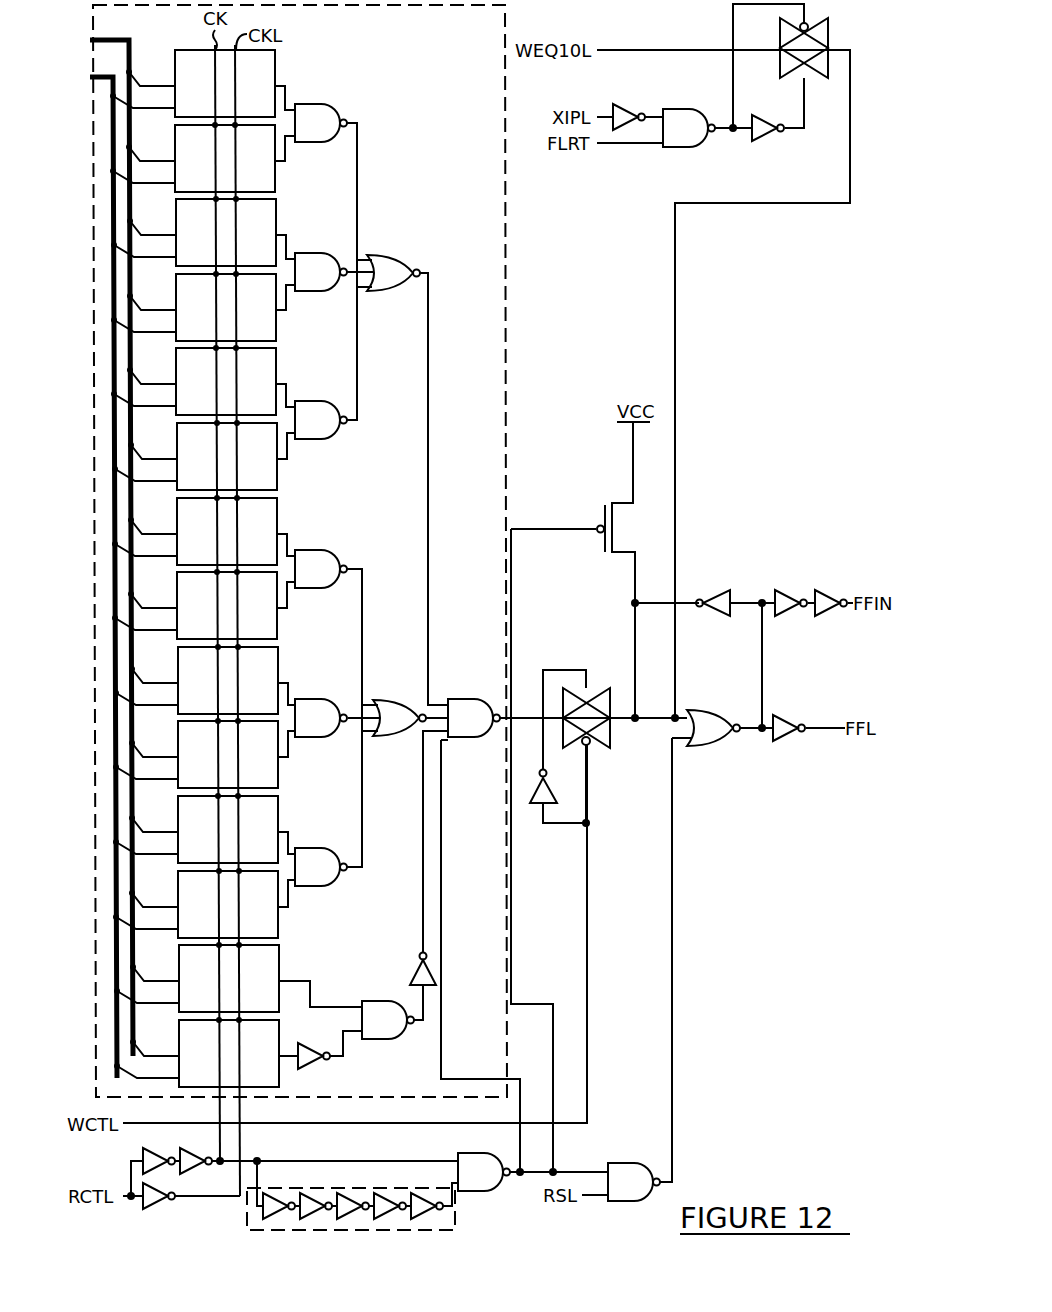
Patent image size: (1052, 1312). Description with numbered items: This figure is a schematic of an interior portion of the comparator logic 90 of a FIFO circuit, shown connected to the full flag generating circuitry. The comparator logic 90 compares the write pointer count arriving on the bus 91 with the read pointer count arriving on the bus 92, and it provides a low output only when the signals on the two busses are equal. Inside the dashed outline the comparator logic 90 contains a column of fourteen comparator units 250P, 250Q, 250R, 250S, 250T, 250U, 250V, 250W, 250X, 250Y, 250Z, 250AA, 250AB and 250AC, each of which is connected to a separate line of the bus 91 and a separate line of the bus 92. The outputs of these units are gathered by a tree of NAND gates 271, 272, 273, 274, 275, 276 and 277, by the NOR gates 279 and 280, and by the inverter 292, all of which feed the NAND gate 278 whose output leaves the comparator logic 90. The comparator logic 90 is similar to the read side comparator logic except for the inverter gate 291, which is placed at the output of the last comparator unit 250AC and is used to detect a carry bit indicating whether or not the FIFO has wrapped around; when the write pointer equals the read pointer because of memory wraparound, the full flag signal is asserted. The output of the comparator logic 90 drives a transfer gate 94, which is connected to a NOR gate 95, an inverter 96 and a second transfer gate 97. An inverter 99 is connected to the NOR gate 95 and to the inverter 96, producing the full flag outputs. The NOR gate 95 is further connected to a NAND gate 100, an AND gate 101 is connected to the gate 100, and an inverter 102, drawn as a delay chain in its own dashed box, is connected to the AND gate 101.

The comparator logic 90 is at (510, 256).
The bus 91 is at (103, 80).
The bus 92 is at (117, 38).
The transfer gate 94 is at (600, 688).
The NOR gate 95 is at (713, 728).
The inverter 96 is at (720, 593).
The transfer gate 97 is at (825, 32).
The inverter 99 is at (787, 744).
The NAND gate 100 is at (634, 1182).
The AND gate 101 is at (484, 1172).
The inverter 102 is at (442, 1232).
The comparator unit 250P is at (268, 64).
The comparator unit 250Q is at (254, 180).
The comparator unit 250R is at (260, 213).
The comparator unit 250S is at (254, 329).
The comparator unit 250T is at (260, 362).
The comparator unit 250U is at (254, 478).
The comparator unit 250V is at (260, 512).
The comparator unit 250W is at (254, 627).
The comparator unit 250X is at (260, 661).
The comparator unit 250Y is at (254, 776).
The comparator unit 250Z is at (260, 810).
The comparator unit 250AA is at (254, 926).
The comparator unit 250AB is at (260, 959).
The comparator unit 250AC is at (254, 1075).
The NAND gate 271 is at (321, 123).
The NAND gate 272 is at (321, 272).
The NAND gate 273 is at (321, 420).
The NAND gate 274 is at (321, 569).
The NAND gate 275 is at (321, 718).
The NAND gate 276 is at (321, 867).
The NAND gate 277 is at (388, 1020).
The NAND gate 278 is at (474, 718).
The NOR gate 279 is at (395, 265).
The NOR gate 280 is at (397, 714).
The inverter gate 291 is at (302, 1044).
The inverter 292 is at (410, 976).